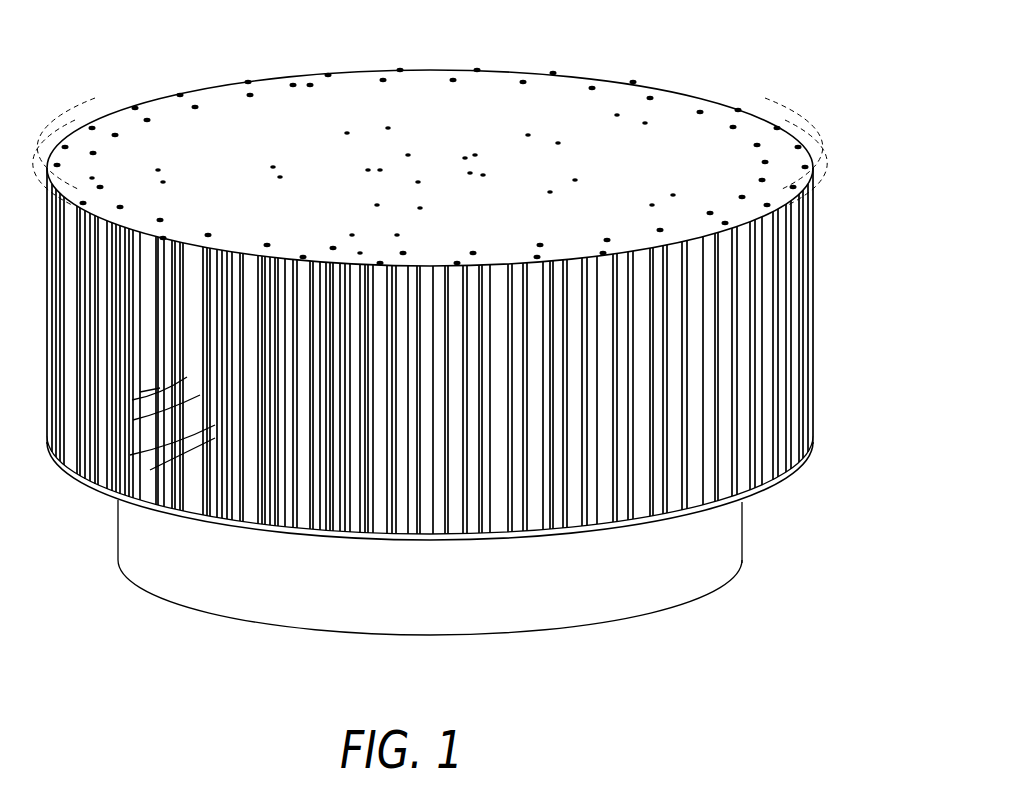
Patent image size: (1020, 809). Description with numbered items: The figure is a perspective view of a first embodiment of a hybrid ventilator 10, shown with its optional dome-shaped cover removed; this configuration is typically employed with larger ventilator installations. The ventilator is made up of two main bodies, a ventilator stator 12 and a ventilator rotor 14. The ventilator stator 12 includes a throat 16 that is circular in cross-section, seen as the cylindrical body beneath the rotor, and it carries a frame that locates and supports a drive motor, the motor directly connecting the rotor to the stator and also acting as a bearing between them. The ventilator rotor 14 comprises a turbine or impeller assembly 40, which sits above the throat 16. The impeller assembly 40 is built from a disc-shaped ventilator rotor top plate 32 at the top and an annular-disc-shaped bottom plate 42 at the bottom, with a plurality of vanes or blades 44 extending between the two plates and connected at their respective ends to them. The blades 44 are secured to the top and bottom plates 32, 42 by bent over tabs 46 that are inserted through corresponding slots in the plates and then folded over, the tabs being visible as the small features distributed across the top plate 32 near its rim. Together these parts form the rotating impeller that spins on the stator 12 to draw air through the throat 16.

The hybrid ventilator 10 is at (460, 354).
The ventilator stator 12 is at (430, 594).
The ventilator rotor 14 is at (460, 347).
The throat 16 is at (226, 598).
The ventilator rotor top plate 32 is at (430, 143).
The turbine or impeller assembly 40 is at (825, 346).
The bottom plate 42 is at (100, 487).
The vanes or blades 44 is at (230, 452).
The bent over tabs 46 is at (205, 106).